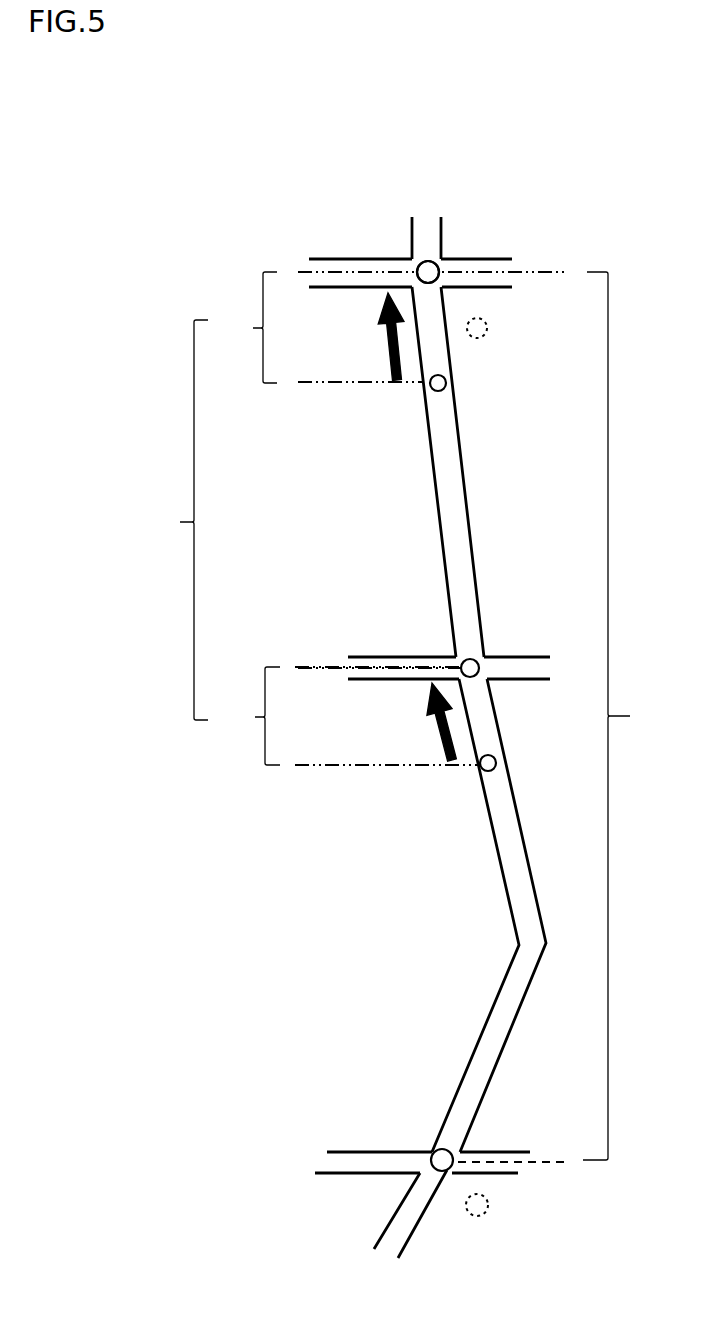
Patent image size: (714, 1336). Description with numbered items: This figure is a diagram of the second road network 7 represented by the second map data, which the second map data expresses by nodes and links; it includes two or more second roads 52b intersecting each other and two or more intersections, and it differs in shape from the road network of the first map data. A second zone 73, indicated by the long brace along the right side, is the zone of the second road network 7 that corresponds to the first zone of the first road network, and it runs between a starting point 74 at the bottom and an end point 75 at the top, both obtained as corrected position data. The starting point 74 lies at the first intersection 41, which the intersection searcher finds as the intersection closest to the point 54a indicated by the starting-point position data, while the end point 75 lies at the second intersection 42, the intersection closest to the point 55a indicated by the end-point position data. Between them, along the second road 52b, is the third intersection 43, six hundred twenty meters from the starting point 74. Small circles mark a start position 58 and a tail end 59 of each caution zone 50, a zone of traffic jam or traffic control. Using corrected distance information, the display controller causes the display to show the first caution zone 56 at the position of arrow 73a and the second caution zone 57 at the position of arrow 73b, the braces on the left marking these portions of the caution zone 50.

The second road network 7 is at (337, 737).
The first intersection 41 is at (482, 1123).
The second intersection 42 is at (453, 235).
The third intersection 43 is at (486, 630).
The caution zone 50 is at (176, 520).
The second road 52b is at (440, 495).
The point indicated by the starting-point position data 54a is at (488, 1200).
The point indicated by the end-point position data 55a is at (488, 336).
The first caution zone 56 is at (350, 716).
The second caution zone 57 is at (321, 327).
The start position of the caution zone 58 is at (441, 277).
The tail end of the caution zone 59 is at (440, 392).
The second zone 73 is at (624, 716).
The arrow 73a is at (450, 727).
The arrow 73b is at (398, 348).
The starting point of the second zone 74 is at (442, 1148).
The end point of the second zone 75 is at (417, 268).